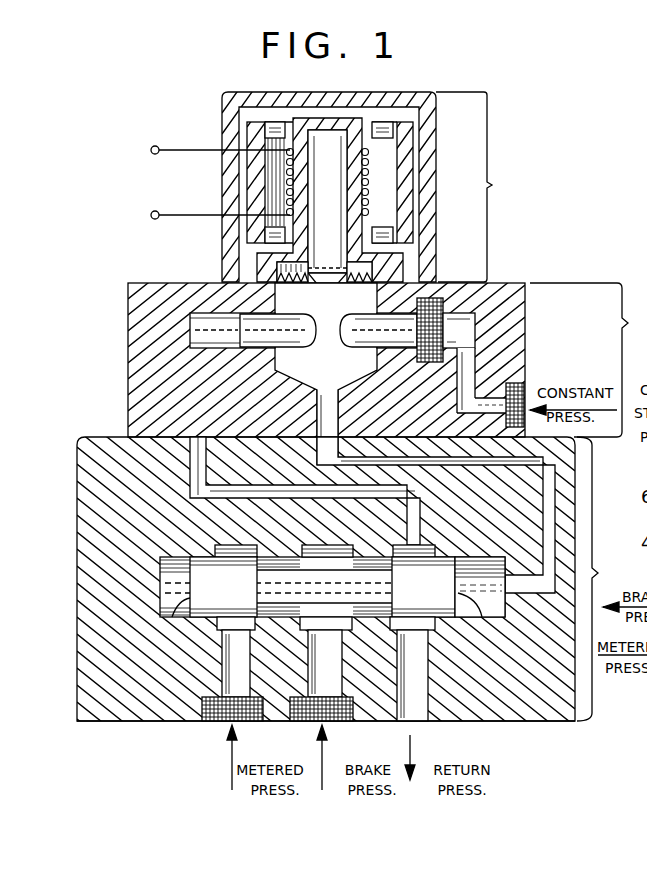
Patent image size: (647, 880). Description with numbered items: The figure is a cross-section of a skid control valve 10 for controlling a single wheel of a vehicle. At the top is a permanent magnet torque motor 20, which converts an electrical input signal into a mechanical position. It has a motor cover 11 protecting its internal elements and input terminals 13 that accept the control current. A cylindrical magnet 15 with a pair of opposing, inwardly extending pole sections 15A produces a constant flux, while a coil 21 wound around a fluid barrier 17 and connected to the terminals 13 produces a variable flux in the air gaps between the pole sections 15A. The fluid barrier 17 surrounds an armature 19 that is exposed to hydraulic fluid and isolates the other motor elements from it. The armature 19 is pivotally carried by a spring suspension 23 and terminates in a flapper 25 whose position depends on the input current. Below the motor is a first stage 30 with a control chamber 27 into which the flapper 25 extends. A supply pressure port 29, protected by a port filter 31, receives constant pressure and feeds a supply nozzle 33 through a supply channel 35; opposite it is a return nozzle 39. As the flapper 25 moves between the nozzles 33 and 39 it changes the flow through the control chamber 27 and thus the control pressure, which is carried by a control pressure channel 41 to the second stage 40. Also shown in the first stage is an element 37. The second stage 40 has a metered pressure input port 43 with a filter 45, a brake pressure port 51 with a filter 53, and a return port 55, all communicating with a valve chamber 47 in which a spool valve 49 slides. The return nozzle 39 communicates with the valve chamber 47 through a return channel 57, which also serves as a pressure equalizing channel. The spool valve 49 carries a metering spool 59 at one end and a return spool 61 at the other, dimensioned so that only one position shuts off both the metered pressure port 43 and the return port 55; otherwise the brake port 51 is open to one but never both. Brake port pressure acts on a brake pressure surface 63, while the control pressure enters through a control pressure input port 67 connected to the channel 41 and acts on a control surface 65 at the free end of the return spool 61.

The skid control valve 10 is at (568, 756).
The motor cover 11 is at (228, 92).
The input terminals 13 is at (183, 149).
The magnet 15 is at (414, 168).
The pole sections 15A is at (384, 126).
The fluid barrier 17 is at (338, 117).
The armature 19 is at (340, 198).
The permanent magnet torque motor 20 is at (499, 196).
The coil 21 is at (369, 173).
The spring suspension 23 is at (400, 275).
The flapper 25 is at (333, 306).
The control chamber 27 is at (283, 297).
The supply pressure port 29 is at (490, 398).
The first stage 30 is at (625, 335).
The port filter 31 is at (515, 386).
The supply nozzle 33 is at (392, 334).
The supply channel 35 is at (472, 372).
The adjusting screw 37 is at (445, 322).
The return nozzle 39 is at (257, 336).
The control pressure channel 41 is at (320, 416).
The second stage 40 is at (350, 459).
The metered pressure input port 43 is at (236, 668).
The filter 45 is at (203, 706).
The valve chamber 47 is at (162, 585).
The spool valve 49 is at (282, 556).
The brake pressure port 51 is at (318, 668).
The filter 53 is at (354, 700).
The return port 55 is at (419, 678).
The return channel 57 is at (266, 490).
The metering spool 59 is at (210, 586).
The return spool 61 is at (408, 596).
The brake pressure surface 63 is at (185, 604).
The control surface 65 is at (461, 597).
The control pressure input port 67 is at (492, 578).